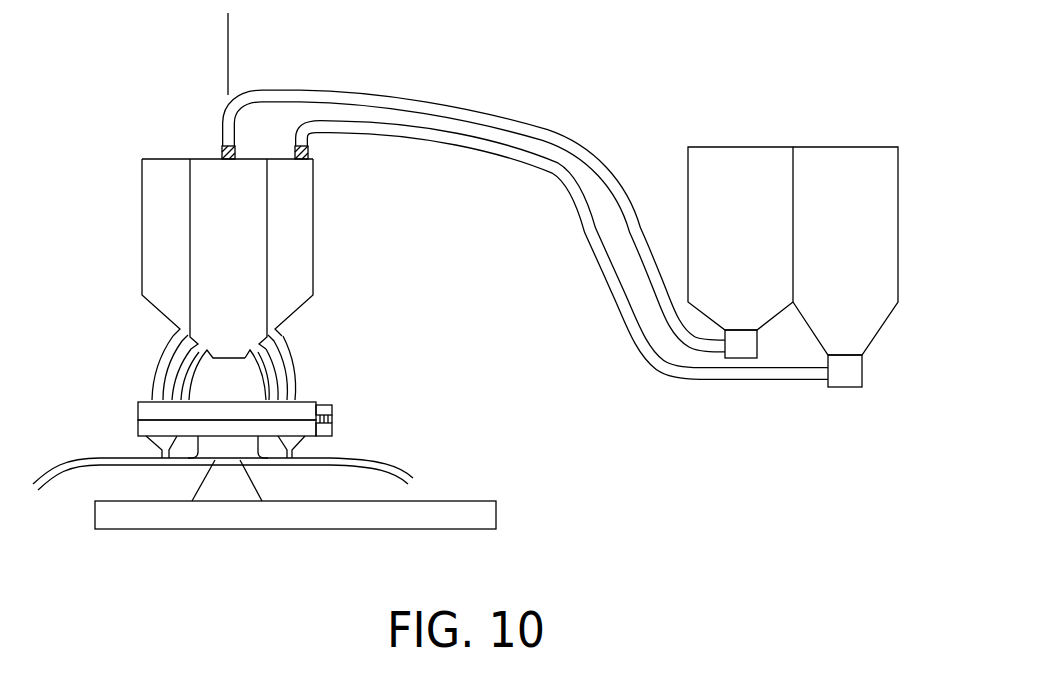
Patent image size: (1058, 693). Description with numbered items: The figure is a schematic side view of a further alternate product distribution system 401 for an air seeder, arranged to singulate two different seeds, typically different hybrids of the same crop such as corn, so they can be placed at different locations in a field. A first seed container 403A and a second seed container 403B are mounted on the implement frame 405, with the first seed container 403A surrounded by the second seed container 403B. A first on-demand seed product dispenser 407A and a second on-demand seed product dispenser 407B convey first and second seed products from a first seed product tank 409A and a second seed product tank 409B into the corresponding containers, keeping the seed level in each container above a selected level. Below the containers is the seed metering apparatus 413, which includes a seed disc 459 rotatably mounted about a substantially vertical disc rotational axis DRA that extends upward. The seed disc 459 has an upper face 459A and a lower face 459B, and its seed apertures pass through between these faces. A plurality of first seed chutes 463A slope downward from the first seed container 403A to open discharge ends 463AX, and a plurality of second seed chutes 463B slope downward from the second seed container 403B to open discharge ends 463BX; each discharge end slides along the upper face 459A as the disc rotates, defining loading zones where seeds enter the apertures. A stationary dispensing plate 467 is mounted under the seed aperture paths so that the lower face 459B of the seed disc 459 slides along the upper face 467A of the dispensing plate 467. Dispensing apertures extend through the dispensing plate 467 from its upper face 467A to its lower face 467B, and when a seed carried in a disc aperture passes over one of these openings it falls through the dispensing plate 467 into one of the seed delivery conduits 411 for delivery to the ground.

The disc rotational axis DRA is at (229, 40).
The product distribution system 401 is at (662, 62).
The first seed container 403A is at (207, 168).
The second seed container 403B is at (298, 227).
The second seed chutes 463B is at (163, 335).
The first seed chutes 463A is at (172, 362).
The discharge end of first seed chute 463AX is at (250, 378).
The discharge end of second seed chute 463BX is at (303, 395).
The upper face of seed disc 459A is at (150, 395).
The seed disc 459 is at (138, 411).
The seed metering apparatus 413 is at (330, 446).
The dispensing plate 467 is at (137, 428).
The lower face of dispensing plate 467B is at (265, 438).
The seed delivery conduits 411 is at (415, 478).
The lower face of seed disc 459B is at (223, 421).
The upper face of dispensing plate 467A is at (324, 517).
The implement frame 405 is at (497, 514).
The first seed product tank 409A is at (720, 147).
The second seed product tank 409B is at (843, 147).
The first on-demand seed product dispenser 407A is at (757, 355).
The second on-demand seed product dispenser 407B is at (862, 377).